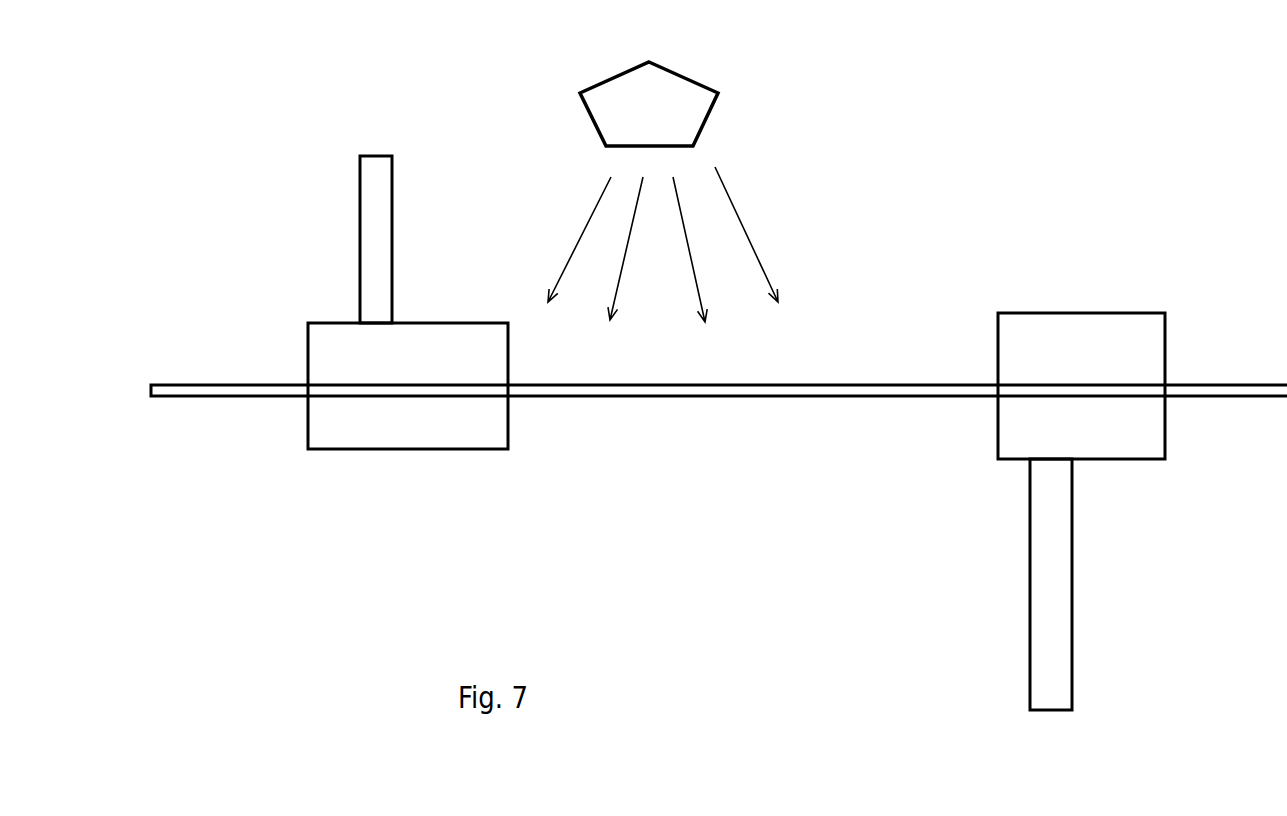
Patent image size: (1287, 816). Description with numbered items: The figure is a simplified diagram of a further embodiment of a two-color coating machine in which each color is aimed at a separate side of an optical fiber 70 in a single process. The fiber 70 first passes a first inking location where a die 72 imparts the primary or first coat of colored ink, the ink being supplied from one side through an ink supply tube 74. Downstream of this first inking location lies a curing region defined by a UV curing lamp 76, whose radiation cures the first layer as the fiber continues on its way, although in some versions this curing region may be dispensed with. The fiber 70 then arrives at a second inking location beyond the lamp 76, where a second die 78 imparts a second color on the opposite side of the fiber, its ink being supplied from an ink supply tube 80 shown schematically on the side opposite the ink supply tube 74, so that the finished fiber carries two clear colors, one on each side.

The optical fiber 70 is at (267, 407).
The die 72 is at (395, 450).
The ink supply tube 74 is at (360, 238).
The UV curing lamp 76 is at (683, 123).
The second die 78 is at (1112, 462).
The ink supply tube 80 is at (1028, 585).